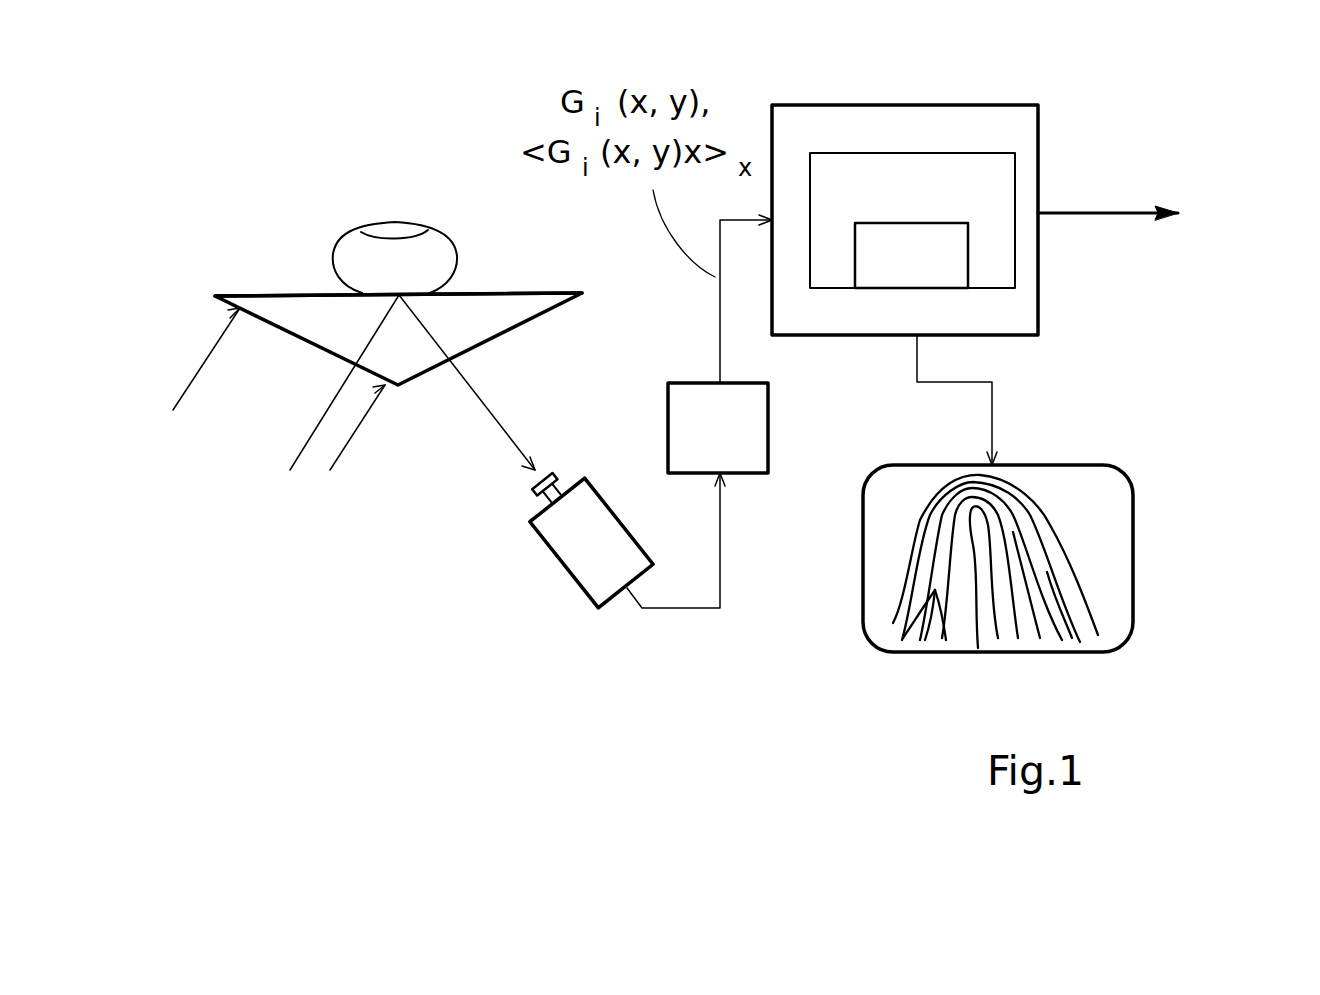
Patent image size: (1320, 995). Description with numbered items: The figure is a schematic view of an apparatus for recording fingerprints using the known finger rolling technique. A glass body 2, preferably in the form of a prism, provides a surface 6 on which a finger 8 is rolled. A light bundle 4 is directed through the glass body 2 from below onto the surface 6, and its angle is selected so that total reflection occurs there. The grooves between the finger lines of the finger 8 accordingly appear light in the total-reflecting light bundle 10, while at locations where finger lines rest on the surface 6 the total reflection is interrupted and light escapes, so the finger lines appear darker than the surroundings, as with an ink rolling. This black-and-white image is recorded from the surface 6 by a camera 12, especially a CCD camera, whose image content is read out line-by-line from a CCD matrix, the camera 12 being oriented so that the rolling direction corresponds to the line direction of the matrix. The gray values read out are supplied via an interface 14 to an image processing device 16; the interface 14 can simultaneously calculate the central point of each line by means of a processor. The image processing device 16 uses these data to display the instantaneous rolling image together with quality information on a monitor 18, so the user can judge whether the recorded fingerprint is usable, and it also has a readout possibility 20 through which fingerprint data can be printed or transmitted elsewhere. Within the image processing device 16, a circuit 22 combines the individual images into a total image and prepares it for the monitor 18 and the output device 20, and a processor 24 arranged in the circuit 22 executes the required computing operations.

The glass body 2 is at (279, 306).
The light bundle 4 is at (342, 448).
The surface 6 is at (495, 293).
The finger 8 is at (450, 243).
The total-reflecting light bundle 10 is at (483, 408).
The camera 12 is at (583, 550).
The interface 14 is at (742, 425).
The image processing device 16 is at (785, 113).
The monitor 18 is at (1107, 552).
The readout possibility 20 is at (1107, 213).
The circuit 22 is at (982, 173).
The processor 24 is at (950, 267).